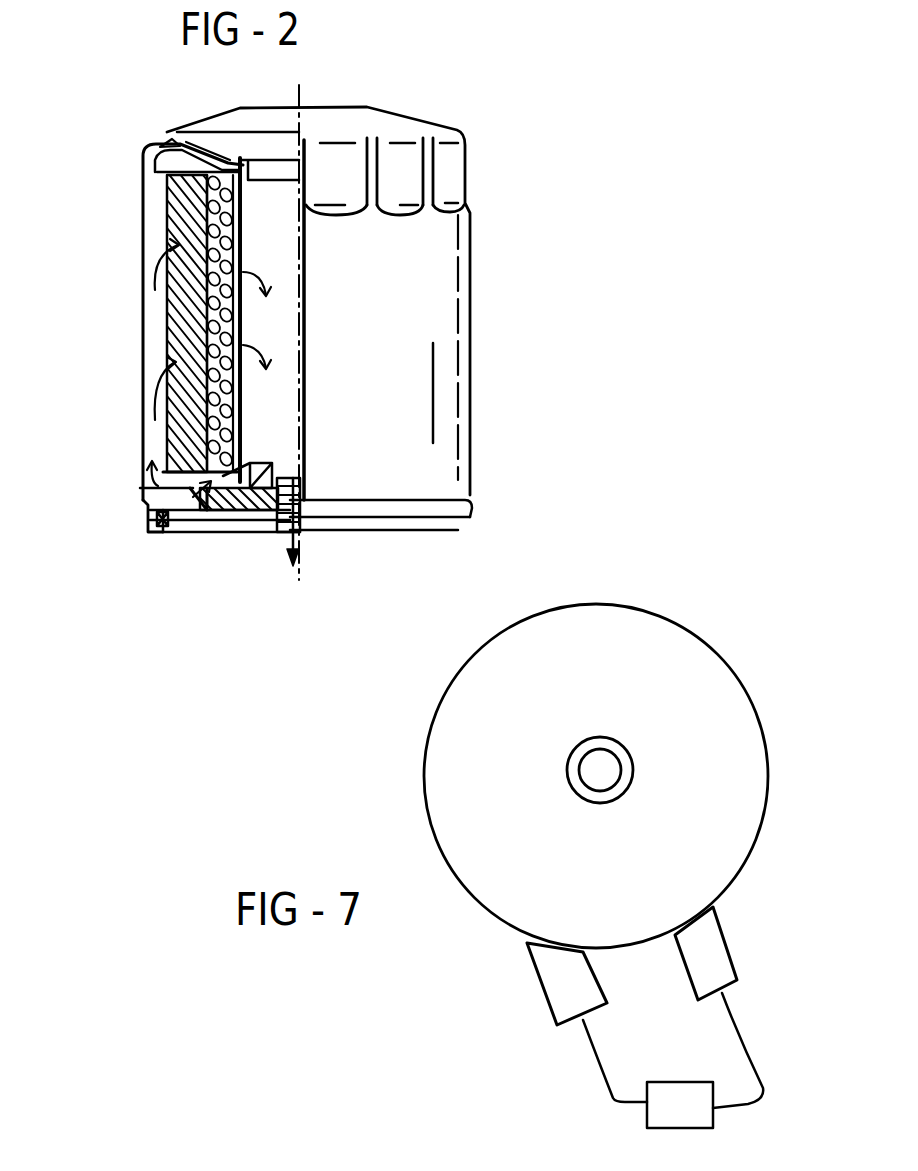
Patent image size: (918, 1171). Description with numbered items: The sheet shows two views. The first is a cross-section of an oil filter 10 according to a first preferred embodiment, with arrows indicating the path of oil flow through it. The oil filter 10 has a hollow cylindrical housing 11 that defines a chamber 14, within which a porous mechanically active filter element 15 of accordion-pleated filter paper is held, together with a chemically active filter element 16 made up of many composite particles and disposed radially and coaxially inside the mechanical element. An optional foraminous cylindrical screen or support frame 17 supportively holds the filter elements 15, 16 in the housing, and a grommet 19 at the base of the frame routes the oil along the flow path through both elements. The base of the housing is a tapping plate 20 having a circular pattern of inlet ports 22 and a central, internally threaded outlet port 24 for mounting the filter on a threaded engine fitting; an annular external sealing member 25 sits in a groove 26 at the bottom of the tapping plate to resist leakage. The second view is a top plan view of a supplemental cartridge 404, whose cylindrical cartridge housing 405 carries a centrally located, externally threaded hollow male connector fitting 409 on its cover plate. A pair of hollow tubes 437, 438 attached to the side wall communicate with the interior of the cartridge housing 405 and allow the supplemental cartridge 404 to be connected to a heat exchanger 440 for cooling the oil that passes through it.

In FIG. 2, the oil filter 10 is at (520, 127).
In FIG. 2, the housing 11 is at (388, 316).
In FIG. 2, the chamber 14 is at (145, 316).
In FIG. 2, the mechanically active filter element 15 is at (177, 297).
In FIG. 2, the chemically active filter element 16 is at (200, 405).
In FIG. 2, the support frame 17 is at (143, 153).
In FIG. 2, the grommet 19 is at (256, 460).
In FIG. 2, the tapping plate 20 is at (250, 527).
In FIG. 2, the inlet ports 22 is at (213, 515).
In FIG. 2, the outlet port 24 is at (282, 535).
In FIG. 2, the external sealing member 25 is at (163, 527).
In FIG. 2, the groove 26 is at (157, 525).
In FIG. 7, the supplemental cartridge 404 is at (765, 660).
In FIG. 7, the cartridge housing 405 is at (755, 817).
In FIG. 7, the male connector fitting 409 is at (575, 793).
In FIG. 7, the hollow tube 437 is at (540, 995).
In FIG. 7, the hollow tube 438 is at (735, 937).
In FIG. 7, the heat exchanger 440 is at (680, 1105).